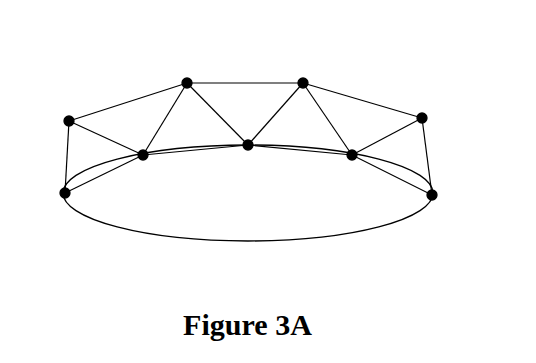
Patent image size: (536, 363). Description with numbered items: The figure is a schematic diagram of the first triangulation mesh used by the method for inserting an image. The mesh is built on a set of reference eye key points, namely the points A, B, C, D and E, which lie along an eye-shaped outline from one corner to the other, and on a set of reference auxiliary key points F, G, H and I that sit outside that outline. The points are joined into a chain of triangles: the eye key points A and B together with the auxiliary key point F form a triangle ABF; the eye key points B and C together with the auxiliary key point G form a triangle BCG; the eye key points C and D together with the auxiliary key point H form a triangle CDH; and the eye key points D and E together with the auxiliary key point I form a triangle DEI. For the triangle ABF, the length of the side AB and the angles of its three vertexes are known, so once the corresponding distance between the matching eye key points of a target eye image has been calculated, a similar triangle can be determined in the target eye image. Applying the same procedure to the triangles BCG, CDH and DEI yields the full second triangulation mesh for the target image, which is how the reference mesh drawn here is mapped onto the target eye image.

The reference eye key point A is at (54, 202).
The reference eye key point B is at (145, 171).
The reference eye key point C is at (245, 158).
The reference eye key point D is at (347, 169).
The reference eye key point E is at (439, 205).
The reference auxiliary key point F is at (63, 109).
The reference auxiliary key point G is at (186, 72).
The reference auxiliary key point H is at (302, 72).
The reference auxiliary key point I is at (422, 105).